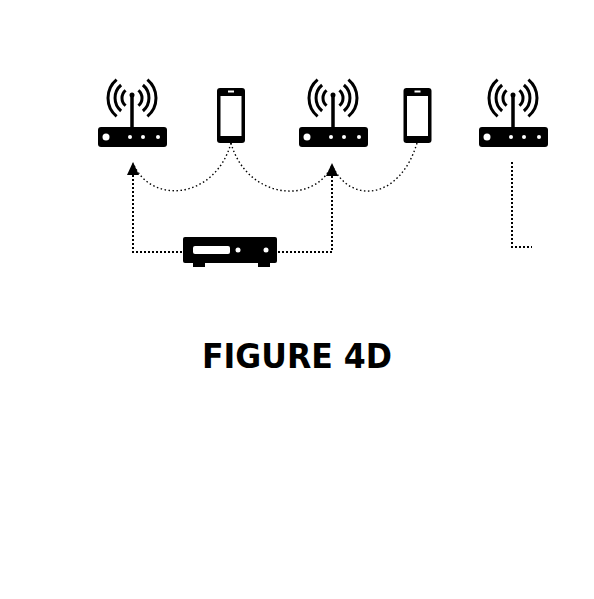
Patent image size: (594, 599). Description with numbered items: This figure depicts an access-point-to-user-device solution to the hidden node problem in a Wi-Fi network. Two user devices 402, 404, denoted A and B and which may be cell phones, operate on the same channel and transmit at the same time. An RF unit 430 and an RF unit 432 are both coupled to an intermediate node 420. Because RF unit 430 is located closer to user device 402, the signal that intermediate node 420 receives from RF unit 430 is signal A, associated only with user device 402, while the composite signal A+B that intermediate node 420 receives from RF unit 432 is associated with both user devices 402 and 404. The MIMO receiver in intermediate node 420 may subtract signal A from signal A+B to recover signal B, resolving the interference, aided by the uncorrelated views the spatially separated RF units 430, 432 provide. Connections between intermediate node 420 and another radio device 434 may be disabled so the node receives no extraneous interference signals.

The user device 402 is at (232, 78).
The user device 404 is at (410, 75).
The intermediate node 420 is at (225, 273).
The RF unit 430 is at (117, 156).
The RF unit 432 is at (335, 75).
The radio device 434 is at (498, 152).